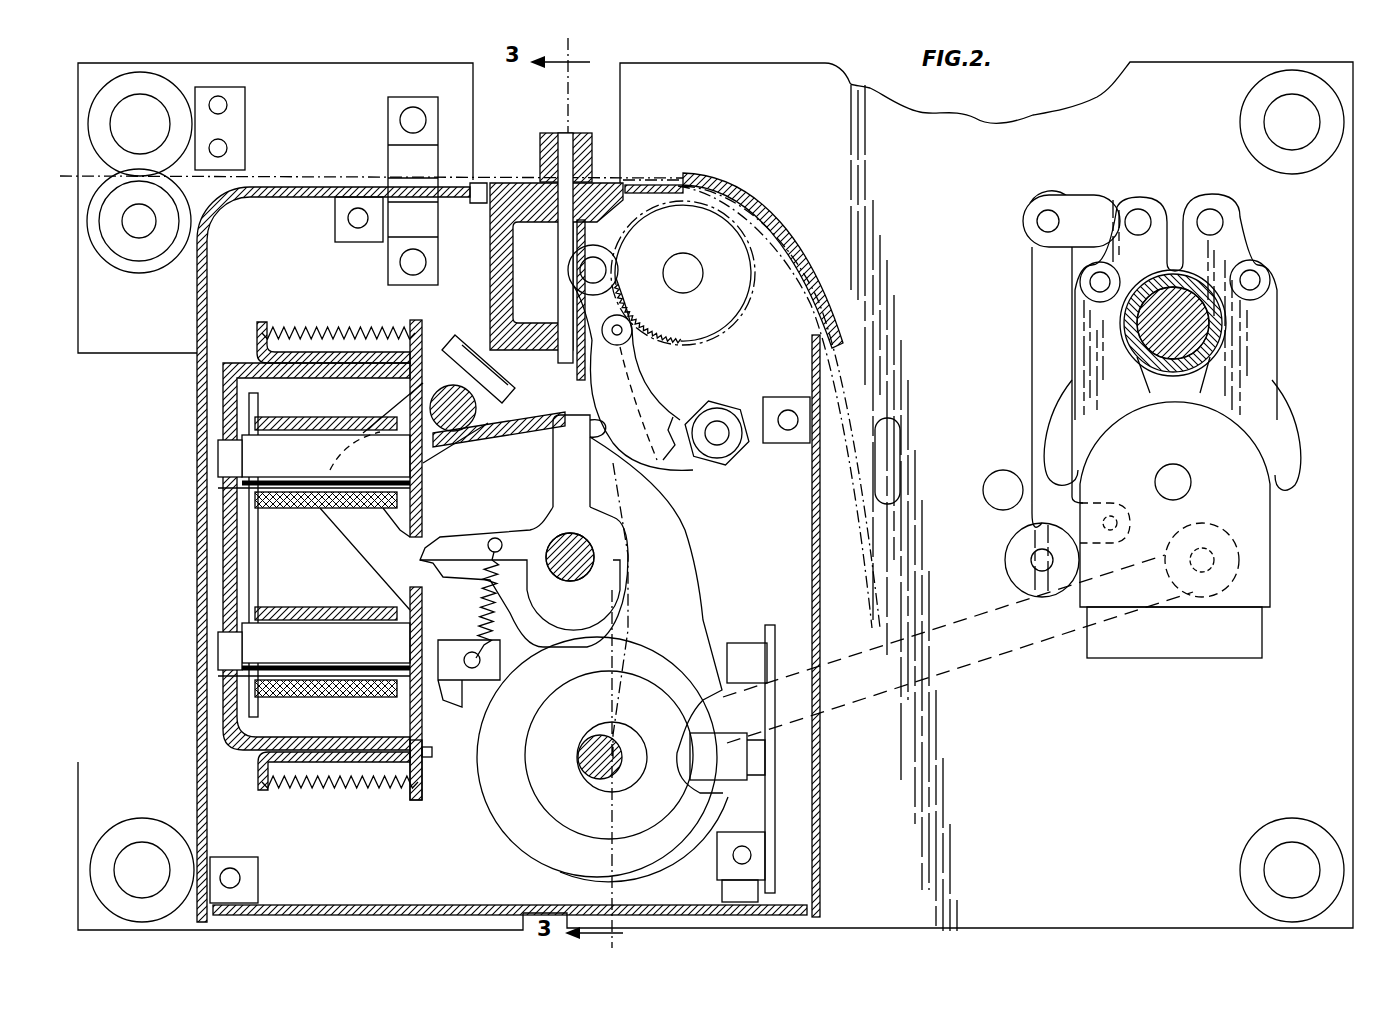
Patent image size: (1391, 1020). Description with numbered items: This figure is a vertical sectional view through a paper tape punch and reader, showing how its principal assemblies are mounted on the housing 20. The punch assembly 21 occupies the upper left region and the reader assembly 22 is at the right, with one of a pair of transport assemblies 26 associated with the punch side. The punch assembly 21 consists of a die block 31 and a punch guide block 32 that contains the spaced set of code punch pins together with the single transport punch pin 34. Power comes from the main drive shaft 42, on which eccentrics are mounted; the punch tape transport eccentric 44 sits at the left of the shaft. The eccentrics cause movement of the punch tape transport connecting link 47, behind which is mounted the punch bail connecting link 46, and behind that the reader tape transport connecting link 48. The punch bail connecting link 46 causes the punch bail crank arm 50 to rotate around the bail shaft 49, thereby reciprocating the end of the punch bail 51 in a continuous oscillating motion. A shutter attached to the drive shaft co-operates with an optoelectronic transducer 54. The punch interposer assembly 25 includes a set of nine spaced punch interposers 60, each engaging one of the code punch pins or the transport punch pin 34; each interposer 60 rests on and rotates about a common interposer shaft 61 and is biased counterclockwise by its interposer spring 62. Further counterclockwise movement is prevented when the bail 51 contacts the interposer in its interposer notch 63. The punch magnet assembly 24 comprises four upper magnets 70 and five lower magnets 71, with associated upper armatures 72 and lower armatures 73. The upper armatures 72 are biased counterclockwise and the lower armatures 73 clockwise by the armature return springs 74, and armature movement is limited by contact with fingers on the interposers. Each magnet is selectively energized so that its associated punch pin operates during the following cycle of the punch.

The housing 20 is at (1352, 294).
The punch assembly 21 is at (197, 503).
The reader assembly 22 is at (1282, 380).
The punch magnet assembly 24 is at (227, 702).
The punch interposer assembly 25 is at (553, 476).
The transport assembly 26 is at (688, 343).
The die block 31 is at (540, 155).
The punch guide block 32 is at (488, 230).
The transport punch pin 34 is at (558, 298).
The main drive shaft 42 is at (590, 780).
The punch tape transport eccentric 44 is at (641, 735).
The punch bail connecting link 46 is at (518, 618).
The punch tape transport connecting rod or link 47 is at (700, 598).
The reader tape transport connecting link 48 is at (905, 690).
The bail shaft 49 is at (495, 385).
The punch bail crank arm 50 is at (480, 340).
The punch bail 51 is at (505, 412).
The optoelectronic transducer 54 is at (748, 758).
The punch interposer 60 is at (573, 503).
The interposer shaft 61 is at (583, 550).
The interposer spring 62 is at (478, 598).
The interposer notch 63 is at (562, 445).
The upper magnet 70 is at (345, 415).
The lower magnet 71 is at (350, 697).
The upper armature 72 is at (415, 318).
The lower armature 73 is at (425, 730).
The armature return spring 74 is at (312, 328).